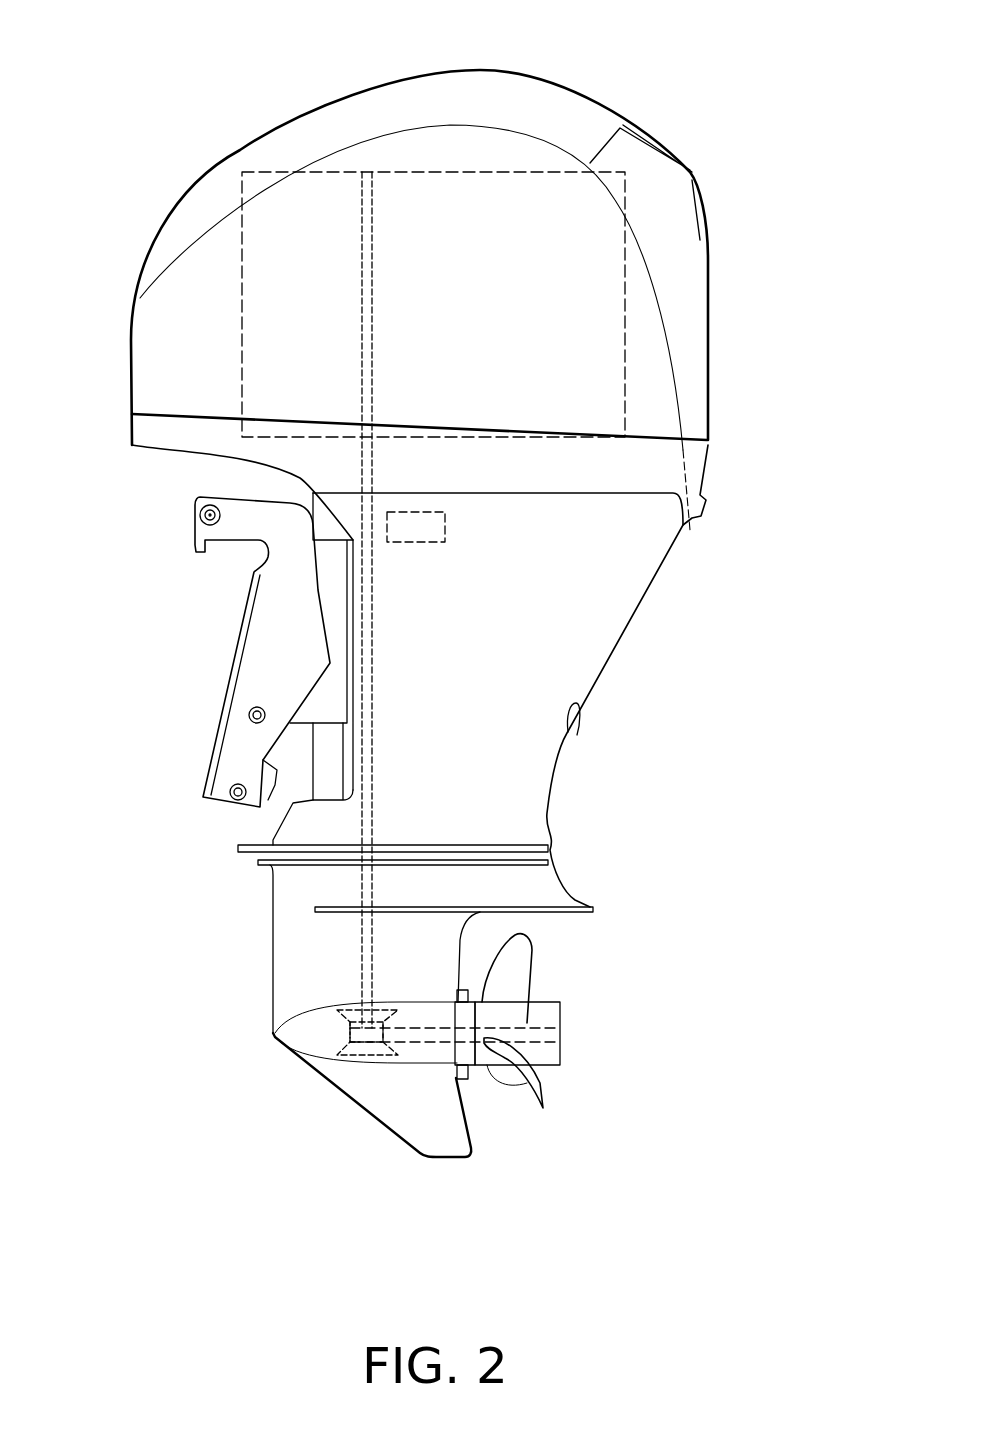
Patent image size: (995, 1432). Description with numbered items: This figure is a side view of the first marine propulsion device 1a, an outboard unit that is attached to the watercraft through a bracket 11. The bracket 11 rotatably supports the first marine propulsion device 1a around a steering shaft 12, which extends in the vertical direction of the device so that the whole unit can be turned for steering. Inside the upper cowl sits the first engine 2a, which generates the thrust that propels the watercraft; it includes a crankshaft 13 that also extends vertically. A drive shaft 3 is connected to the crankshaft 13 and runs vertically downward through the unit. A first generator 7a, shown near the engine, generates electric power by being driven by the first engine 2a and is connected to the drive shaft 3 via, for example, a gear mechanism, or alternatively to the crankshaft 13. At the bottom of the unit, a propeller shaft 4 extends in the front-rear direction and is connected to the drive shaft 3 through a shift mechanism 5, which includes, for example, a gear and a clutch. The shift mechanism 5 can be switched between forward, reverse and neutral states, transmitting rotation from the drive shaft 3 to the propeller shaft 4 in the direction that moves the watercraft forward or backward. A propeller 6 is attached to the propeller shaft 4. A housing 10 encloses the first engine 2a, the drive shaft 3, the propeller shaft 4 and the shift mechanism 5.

The first marine propulsion device 1a is at (153, 93).
The first engine 2a is at (240, 288).
The crankshaft 13 is at (360, 358).
The first generator 7a is at (445, 523).
The drive shaft 3 is at (372, 617).
The housing 10 is at (637, 702).
The bracket 11 is at (245, 607).
The steering shaft 12 is at (328, 765).
The shift mechanism 5 is at (318, 1065).
The propeller shaft 4 is at (433, 1040).
The propeller 6 is at (505, 1066).